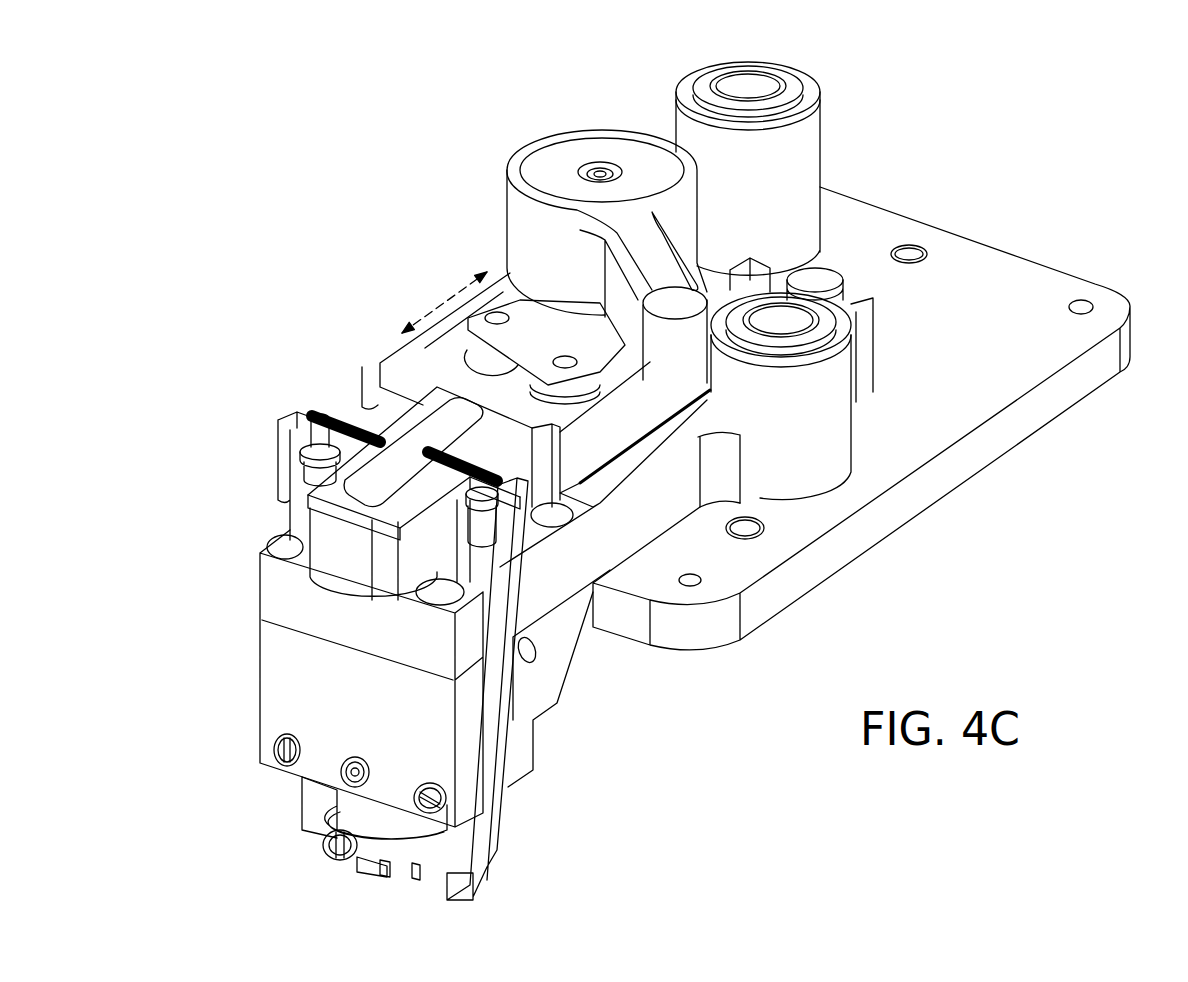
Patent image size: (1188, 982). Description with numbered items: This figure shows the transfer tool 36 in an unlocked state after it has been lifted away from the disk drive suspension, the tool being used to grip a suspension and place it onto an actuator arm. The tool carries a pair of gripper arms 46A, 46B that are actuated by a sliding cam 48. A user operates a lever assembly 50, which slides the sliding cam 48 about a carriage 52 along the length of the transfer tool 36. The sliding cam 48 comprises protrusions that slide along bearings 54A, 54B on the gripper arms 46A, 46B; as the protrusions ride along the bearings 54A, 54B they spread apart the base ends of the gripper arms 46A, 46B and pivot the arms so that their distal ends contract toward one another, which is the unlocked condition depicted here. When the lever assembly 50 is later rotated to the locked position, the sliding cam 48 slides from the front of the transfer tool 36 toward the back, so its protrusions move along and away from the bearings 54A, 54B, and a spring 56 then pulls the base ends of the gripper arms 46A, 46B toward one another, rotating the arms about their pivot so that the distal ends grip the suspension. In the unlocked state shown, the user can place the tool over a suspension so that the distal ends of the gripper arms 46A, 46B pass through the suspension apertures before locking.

The transfer tool 36 is at (952, 144).
The lever assembly 50 is at (510, 133).
The sliding cam 48 is at (403, 368).
The carriage 52 is at (261, 568).
The bearing 54A is at (305, 468).
The bearing 54B is at (468, 522).
The spring 56 is at (437, 447).
The gripper arm 46A is at (306, 797).
The gripper arm 46B is at (489, 848).